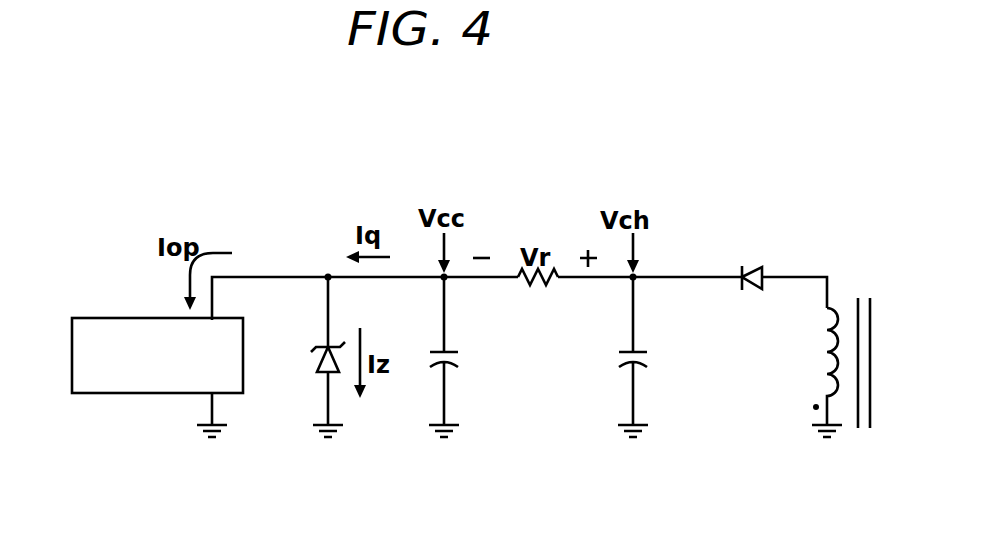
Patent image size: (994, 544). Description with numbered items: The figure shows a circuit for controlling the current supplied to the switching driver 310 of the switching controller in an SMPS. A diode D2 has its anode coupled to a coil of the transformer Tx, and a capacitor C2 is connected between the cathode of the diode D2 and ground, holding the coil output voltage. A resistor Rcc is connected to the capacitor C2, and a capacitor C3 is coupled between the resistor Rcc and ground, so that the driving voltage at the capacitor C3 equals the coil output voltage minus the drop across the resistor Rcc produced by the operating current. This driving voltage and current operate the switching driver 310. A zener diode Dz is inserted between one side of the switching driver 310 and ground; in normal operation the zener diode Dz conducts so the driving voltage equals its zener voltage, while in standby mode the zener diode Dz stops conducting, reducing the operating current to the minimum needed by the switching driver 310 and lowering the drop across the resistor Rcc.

The switching driver 310 is at (115, 393).
The zener diode Dz is at (310, 356).
The capacitor C3 is at (465, 356).
The resistor Rcc is at (538, 293).
The capacitor C2 is at (654, 356).
The diode D2 is at (756, 263).
The transformer Tx is at (846, 351).